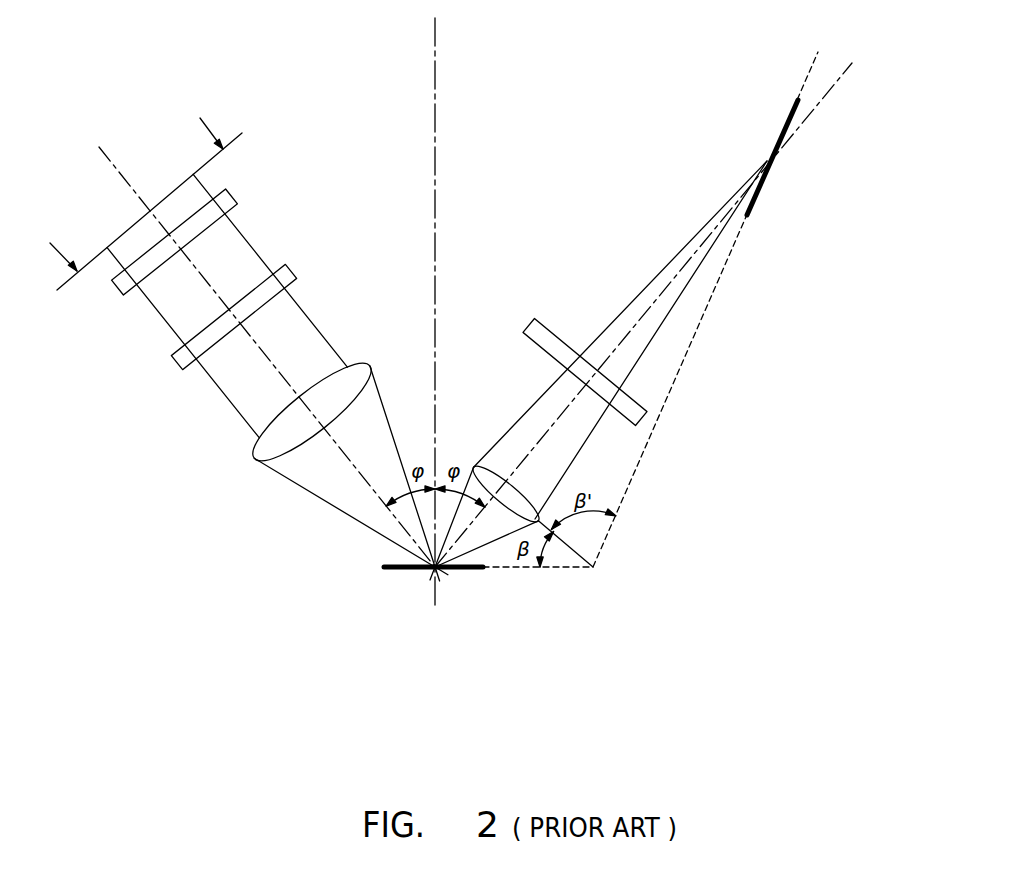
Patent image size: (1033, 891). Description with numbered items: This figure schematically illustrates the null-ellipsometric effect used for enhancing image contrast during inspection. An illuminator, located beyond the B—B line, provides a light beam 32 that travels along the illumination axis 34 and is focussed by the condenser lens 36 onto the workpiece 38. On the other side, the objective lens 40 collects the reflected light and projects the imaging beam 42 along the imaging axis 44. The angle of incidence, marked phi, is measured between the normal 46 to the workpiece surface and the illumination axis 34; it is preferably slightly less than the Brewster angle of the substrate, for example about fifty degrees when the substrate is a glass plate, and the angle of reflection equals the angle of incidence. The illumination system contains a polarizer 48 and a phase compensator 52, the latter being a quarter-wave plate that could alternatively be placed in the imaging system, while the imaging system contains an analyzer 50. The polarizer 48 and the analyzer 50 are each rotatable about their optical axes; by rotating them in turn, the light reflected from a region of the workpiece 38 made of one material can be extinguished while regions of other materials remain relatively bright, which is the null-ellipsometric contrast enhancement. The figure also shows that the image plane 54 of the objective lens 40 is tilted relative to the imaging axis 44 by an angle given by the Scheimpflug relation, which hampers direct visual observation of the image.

The light beam 32 is at (277, 377).
The illumination axis 34 is at (230, 307).
The condenser lens 36 is at (327, 386).
The workpiece 38 is at (394, 600).
The objective lens 40 is at (505, 458).
The imaging beam 42 is at (606, 364).
The imaging axis 44 is at (673, 315).
The normal 46 is at (487, 311).
The polarizer 48 is at (223, 221).
The analyzer 50 is at (566, 338).
The phase compensator 52 is at (267, 297).
The image plane 54 is at (731, 140).